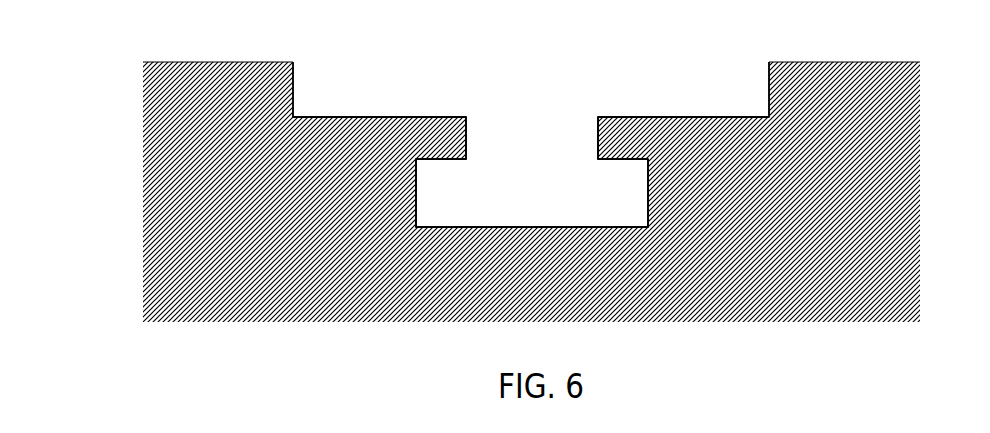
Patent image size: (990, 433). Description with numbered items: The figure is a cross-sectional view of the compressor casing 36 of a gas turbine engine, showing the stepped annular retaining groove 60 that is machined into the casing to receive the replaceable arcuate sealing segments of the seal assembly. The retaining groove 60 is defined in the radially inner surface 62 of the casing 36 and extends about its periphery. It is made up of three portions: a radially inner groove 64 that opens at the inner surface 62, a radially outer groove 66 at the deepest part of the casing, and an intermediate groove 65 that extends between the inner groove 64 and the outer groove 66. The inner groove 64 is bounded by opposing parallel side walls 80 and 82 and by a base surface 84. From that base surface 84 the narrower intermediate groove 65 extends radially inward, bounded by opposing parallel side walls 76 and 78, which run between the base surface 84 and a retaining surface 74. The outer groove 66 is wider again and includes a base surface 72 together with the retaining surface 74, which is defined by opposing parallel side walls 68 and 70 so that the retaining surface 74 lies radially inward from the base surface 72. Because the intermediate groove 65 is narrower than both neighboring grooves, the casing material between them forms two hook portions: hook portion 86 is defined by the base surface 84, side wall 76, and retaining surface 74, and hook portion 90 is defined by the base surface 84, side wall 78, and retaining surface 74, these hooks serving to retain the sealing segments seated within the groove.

The compressor casing 36 is at (897, 73).
The retaining groove 60 is at (375, 67).
The radially inner surface 62 is at (232, 60).
The radially inner groove 64 is at (740, 63).
The intermediate groove 65 is at (493, 143).
The radially outer groove 66 is at (575, 195).
The side wall 68 is at (416, 198).
The side wall 70 is at (648, 187).
The base surface 72 is at (483, 227).
The retaining surface 74 is at (450, 163).
The side wall 76 is at (467, 123).
The side wall 78 is at (597, 130).
The side wall 80 is at (293, 75).
The side wall 82 is at (769, 78).
The base surface 84 is at (365, 118).
The hook portion 86 is at (620, 123).
The hook portion 90 is at (446, 123).